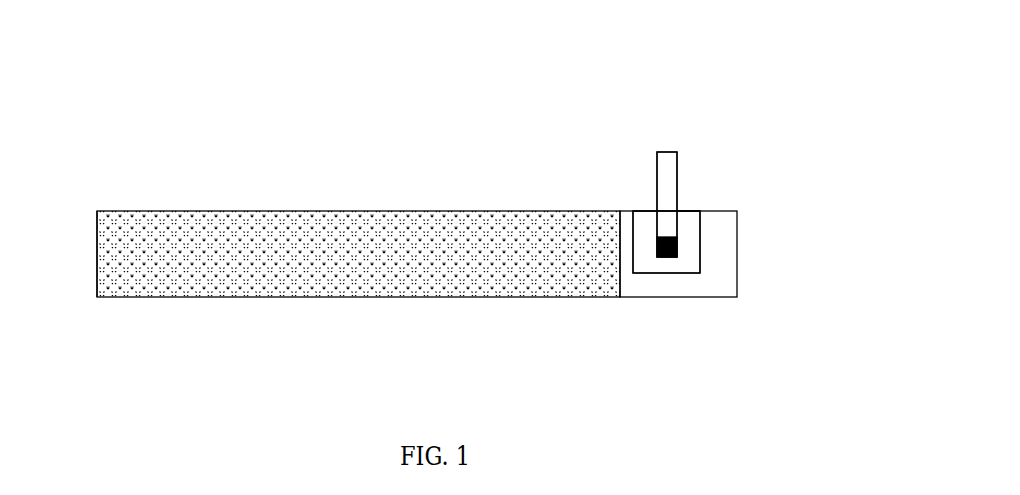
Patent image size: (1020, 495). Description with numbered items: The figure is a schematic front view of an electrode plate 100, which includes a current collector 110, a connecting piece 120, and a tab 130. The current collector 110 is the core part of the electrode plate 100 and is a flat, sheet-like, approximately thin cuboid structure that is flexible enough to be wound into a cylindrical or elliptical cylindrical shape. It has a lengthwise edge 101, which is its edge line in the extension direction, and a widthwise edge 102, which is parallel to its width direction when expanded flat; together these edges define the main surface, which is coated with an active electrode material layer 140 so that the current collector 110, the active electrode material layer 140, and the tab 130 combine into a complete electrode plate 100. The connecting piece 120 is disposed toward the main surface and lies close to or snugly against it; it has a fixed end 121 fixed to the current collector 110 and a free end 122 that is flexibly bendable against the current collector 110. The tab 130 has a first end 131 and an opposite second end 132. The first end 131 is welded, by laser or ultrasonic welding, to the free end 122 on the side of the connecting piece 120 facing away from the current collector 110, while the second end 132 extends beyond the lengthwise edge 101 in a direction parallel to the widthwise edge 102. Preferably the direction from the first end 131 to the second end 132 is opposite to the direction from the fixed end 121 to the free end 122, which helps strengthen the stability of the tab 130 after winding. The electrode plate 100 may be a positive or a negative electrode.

The electrode plate 100 is at (723, 55).
The lengthwise edge 101 is at (183, 298).
The widthwise edge 102 is at (97, 253).
The current collector 110 is at (695, 324).
The connecting piece 120 is at (785, 142).
The fixed end 121 is at (685, 212).
The free end 122 is at (695, 273).
The tab 130 is at (556, 110).
The first end 131 is at (656, 247).
The second end 132 is at (669, 158).
The active electrode material layer 140 is at (520, 282).